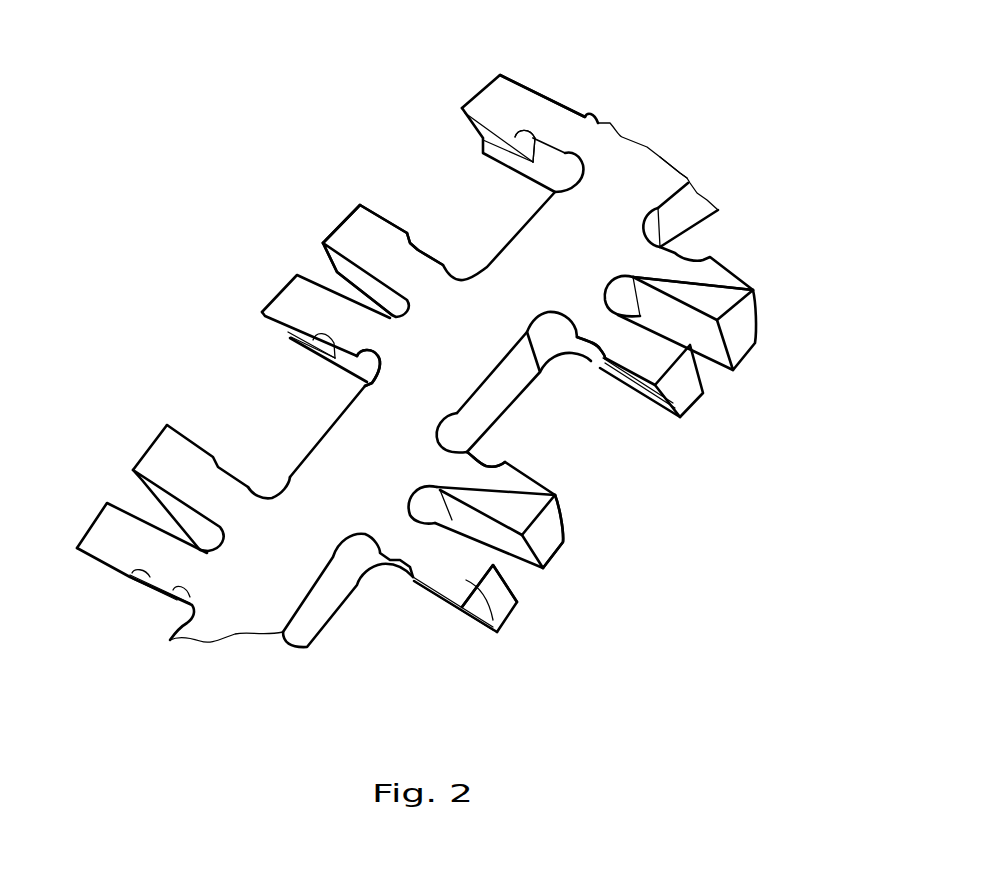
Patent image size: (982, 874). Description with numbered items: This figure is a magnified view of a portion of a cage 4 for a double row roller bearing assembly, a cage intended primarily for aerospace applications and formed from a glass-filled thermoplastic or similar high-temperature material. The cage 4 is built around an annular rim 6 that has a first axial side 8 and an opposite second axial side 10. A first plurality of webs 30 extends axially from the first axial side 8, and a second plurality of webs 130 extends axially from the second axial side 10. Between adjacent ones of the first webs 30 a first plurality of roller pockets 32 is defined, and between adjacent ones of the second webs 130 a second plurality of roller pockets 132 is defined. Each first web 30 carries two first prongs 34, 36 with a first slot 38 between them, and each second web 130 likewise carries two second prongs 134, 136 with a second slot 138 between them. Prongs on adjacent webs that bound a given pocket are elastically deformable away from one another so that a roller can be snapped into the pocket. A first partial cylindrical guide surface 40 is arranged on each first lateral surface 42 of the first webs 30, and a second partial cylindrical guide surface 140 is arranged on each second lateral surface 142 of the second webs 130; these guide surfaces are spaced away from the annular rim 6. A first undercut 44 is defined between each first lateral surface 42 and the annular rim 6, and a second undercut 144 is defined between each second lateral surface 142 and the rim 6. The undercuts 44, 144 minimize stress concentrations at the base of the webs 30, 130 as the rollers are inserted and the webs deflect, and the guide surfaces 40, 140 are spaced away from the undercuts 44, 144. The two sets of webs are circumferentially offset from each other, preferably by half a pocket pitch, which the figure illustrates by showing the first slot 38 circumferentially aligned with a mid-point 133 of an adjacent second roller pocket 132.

The cage 4 is at (711, 188).
The annular rim 6 is at (570, 256).
The first axial side 8 is at (322, 434).
The second axial side 10 is at (313, 593).
The first plurality of webs 30 is at (362, 215).
The first plurality of roller pockets 32 is at (508, 197).
The first prong 34 is at (297, 303).
The first prong 36 is at (343, 232).
The first slot 38 is at (343, 274).
The first partial cylindrical guide surface 40 is at (487, 138).
The first lateral surface 42 is at (550, 167).
The first undercut 44 is at (370, 366).
The second plurality of webs 130 is at (495, 632).
The second plurality of roller pockets 132 is at (757, 306).
The mid-point 133 is at (503, 392).
The second prong 134 is at (743, 337).
The second prong 136 is at (690, 387).
The second slot 138 is at (662, 312).
The second partial cylindrical guide surface 140 is at (668, 402).
The second lateral surface 142 is at (593, 360).
The second undercut 144 is at (663, 168).